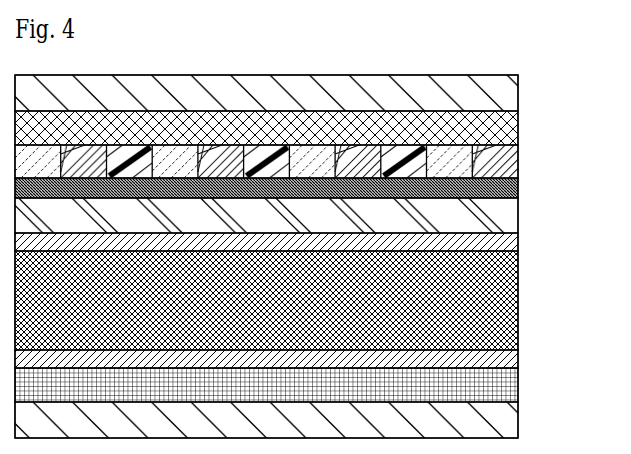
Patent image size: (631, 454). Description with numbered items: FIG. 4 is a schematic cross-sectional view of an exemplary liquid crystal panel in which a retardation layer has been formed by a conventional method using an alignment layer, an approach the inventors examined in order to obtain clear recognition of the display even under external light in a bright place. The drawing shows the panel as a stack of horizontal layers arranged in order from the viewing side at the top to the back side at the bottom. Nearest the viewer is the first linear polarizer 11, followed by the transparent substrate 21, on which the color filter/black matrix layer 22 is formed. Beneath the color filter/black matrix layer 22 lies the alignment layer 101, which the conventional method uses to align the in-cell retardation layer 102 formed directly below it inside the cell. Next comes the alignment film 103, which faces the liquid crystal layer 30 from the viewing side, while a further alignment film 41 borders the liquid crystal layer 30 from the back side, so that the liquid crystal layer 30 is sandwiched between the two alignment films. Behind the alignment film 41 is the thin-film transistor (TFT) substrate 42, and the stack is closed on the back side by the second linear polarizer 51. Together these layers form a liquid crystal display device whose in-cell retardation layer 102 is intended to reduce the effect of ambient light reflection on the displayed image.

The first linear polarizer 11 is at (518, 94).
The transparent substrate 21 is at (518, 128).
The color filter/black matrix layer 22 is at (518, 158).
The alignment layer 101 is at (518, 187).
The in-cell retardation layer 102 is at (508, 219).
The alignment film 103 is at (518, 246).
The liquid crystal layer 30 is at (507, 302).
The alignment film 41 is at (510, 355).
The thin-film transistor (TFT) substrate 42 is at (510, 385).
The second linear polarizer 51 is at (508, 418).